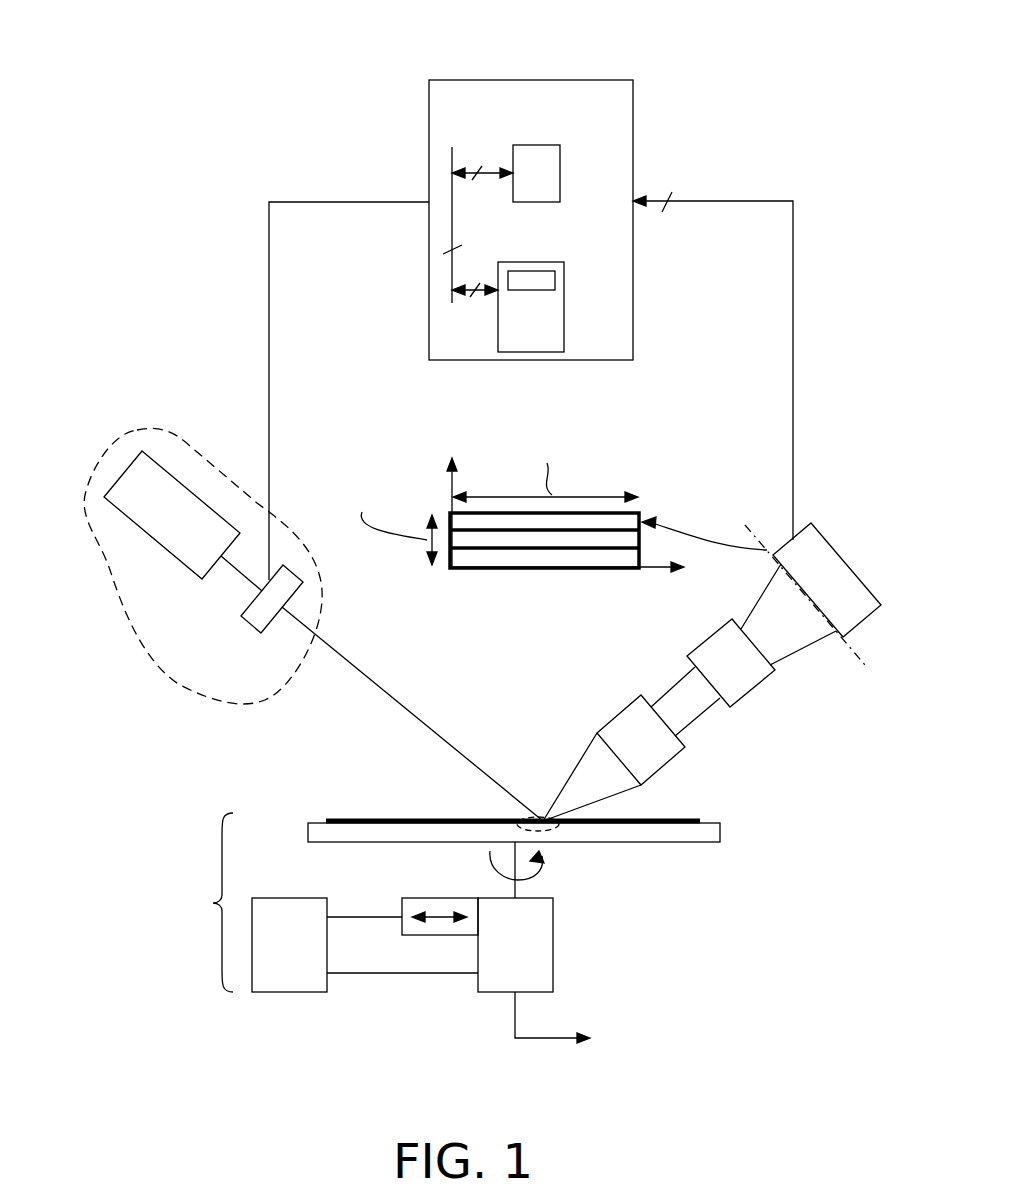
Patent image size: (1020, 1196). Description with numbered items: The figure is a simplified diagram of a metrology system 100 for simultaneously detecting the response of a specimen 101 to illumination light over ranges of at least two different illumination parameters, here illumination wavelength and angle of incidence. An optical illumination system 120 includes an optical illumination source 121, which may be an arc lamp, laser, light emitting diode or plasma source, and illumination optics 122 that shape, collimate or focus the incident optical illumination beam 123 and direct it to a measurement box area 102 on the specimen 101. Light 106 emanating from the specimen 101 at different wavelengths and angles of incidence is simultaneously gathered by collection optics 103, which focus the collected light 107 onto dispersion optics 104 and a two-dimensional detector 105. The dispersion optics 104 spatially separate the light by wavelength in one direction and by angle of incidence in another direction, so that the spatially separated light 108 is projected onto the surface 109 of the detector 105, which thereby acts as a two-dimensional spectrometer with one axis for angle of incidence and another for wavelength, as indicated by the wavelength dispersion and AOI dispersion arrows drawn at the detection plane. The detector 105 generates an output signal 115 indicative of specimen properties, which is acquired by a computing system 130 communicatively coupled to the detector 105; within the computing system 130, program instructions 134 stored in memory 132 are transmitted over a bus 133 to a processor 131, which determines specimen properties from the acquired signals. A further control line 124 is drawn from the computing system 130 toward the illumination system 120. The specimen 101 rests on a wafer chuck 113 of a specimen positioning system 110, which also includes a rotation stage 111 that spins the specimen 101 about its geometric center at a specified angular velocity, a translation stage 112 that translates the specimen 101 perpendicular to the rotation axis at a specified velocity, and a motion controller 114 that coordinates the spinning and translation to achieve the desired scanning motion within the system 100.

The metrology system 100 is at (97, 110).
The specimen 101 is at (695, 818).
The measurement box area 102 is at (560, 831).
The collection optics 103 is at (626, 751).
The dispersion optics 104 is at (716, 674).
The detector 105 is at (812, 589).
The collected light 106 is at (574, 764).
The collected light 107 is at (668, 686).
The spatially separated light 108 is at (793, 657).
The detector surface 109 is at (530, 570).
The specimen positioning system 110 is at (212, 903).
The rotation stage 111 is at (500, 954).
The translation stage 112 is at (402, 898).
The wafer chuck 113 is at (309, 832).
The motion controller 114 is at (275, 954).
The output signal 115 is at (682, 188).
The optical illumination system 120 is at (137, 430).
The optical illumination source 121 is at (161, 530).
The illumination optics 122 is at (250, 624).
The incident optical illumination beam 123 is at (355, 672).
The control signal 124 is at (255, 250).
The computing system 130 is at (517, 104).
The processor 131 is at (561, 173).
The memory 132 is at (498, 337).
The bus 133 is at (453, 216).
The program instructions 134 is at (556, 281).